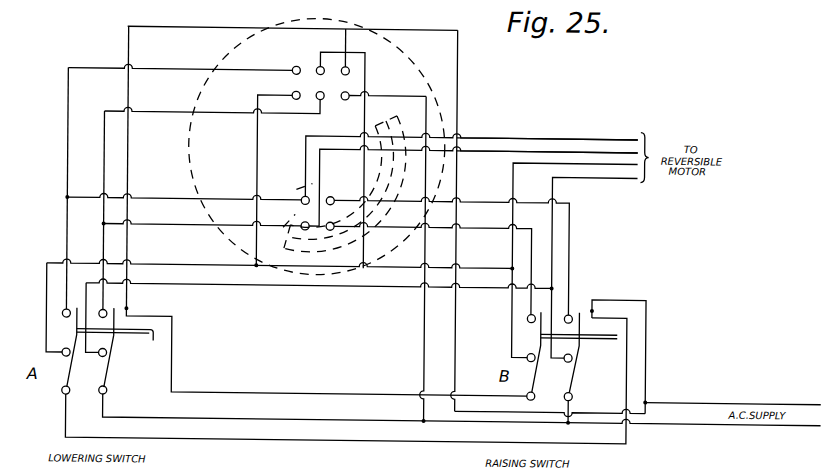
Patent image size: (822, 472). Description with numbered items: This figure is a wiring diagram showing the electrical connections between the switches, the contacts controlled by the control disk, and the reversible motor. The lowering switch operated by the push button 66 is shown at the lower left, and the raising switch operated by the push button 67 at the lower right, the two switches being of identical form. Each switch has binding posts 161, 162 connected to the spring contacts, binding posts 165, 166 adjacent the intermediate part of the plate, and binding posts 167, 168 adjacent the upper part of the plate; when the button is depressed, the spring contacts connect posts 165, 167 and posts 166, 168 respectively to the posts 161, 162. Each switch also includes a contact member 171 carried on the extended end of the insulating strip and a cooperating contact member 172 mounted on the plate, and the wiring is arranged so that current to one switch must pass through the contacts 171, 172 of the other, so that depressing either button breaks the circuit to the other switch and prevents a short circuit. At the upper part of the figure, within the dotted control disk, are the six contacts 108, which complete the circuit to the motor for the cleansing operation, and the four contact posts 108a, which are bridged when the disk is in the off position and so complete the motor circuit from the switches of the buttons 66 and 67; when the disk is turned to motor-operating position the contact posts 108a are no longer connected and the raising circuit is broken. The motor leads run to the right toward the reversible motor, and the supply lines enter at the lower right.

The contacts 108 is at (316, 67).
The contact posts 108a is at (331, 233).
The binding post 161 is at (63, 396).
The binding post 162 is at (108, 395).
The binding post 165 is at (63, 353).
The binding post 166 is at (106, 359).
The binding post 167 is at (63, 317).
The binding post 168 is at (100, 314).
The contact member 171 is at (140, 321).
The contact member 172 is at (128, 312).
The push button 66 is at (114, 349).
The push button 67 is at (618, 334).